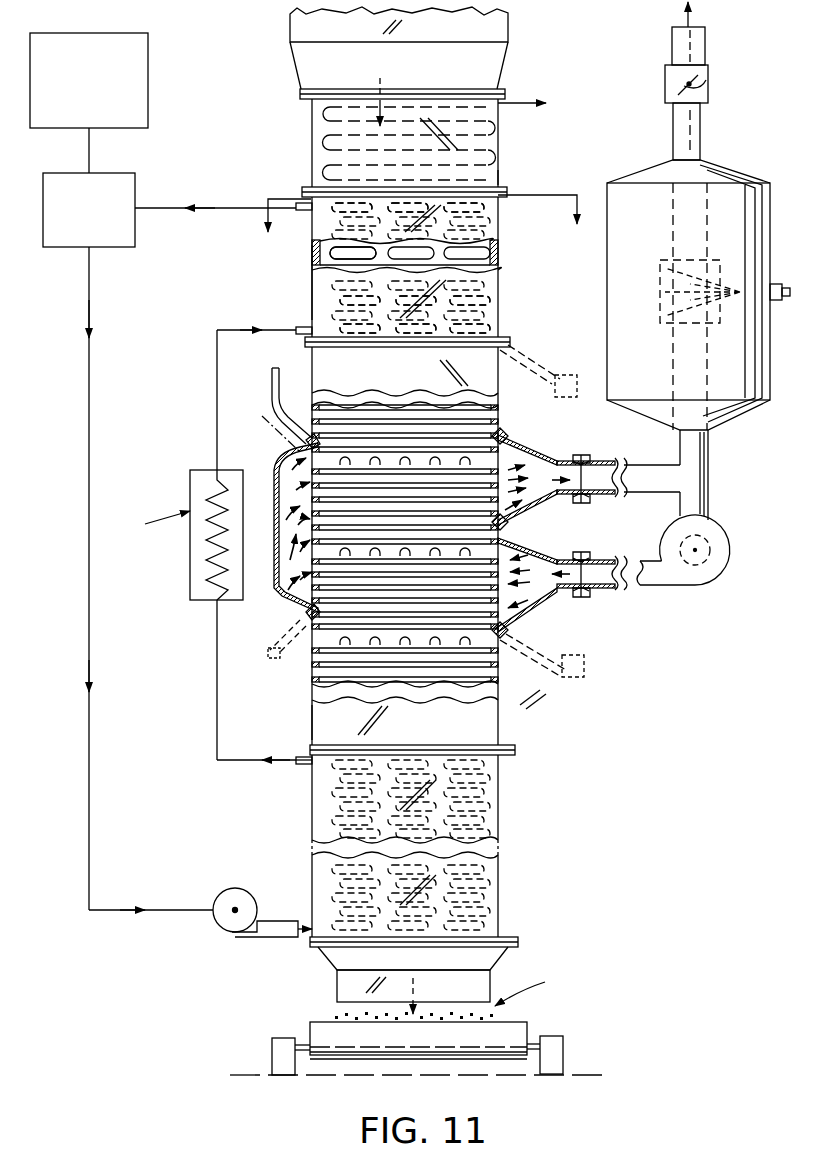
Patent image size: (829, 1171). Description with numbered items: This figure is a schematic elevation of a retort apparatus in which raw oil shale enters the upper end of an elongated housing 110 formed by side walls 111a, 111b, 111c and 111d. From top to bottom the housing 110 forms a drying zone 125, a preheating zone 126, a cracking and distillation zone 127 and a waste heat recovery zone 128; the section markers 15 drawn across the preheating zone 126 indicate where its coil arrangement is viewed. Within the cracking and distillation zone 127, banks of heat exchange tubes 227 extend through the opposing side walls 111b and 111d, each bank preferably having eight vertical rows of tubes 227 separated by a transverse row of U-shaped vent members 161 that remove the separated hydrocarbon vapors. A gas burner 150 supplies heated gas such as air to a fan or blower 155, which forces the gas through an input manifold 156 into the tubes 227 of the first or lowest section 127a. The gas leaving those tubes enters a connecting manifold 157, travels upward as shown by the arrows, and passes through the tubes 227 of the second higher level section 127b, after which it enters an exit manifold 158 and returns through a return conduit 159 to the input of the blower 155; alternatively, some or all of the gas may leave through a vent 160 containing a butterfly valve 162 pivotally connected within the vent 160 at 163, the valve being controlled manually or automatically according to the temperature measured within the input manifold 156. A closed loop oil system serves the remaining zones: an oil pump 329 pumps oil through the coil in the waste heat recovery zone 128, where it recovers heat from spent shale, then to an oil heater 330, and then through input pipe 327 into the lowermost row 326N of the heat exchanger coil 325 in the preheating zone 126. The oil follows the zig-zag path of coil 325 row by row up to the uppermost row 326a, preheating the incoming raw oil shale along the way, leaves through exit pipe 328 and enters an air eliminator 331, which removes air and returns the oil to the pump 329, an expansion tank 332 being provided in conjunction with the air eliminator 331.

The elongated housing 110 is at (300, 128).
The section line 15 is at (545, 177).
The drying zone 125 is at (295, 97).
The preheating zone 126 is at (165, 196).
The cracking and distillation zone 127 is at (165, 346).
The waste heat recovery zone 128 is at (165, 746).
The side wall 111a is at (463, 262).
The side wall 111b is at (500, 250).
The side wall 111c is at (472, 300).
The side wall 111d is at (311, 259).
The first or lowest section 127a is at (351, 586).
The second higher level section 127b is at (357, 476).
The U-shaped vent members 161 is at (466, 530).
The connecting manifold 157 is at (262, 426).
The exit manifold 158 is at (548, 374).
The input manifold 156 is at (548, 560).
The heat exchange tubes 227 is at (501, 416).
The return conduit 159 is at (641, 474).
The fan or blower 155 is at (690, 587).
The gas burner 150 is at (748, 415).
The vent 160 is at (674, 133).
The butterfly valve 162 is at (668, 90).
The pivotal connection 163 is at (706, 90).
The expansion tank 332 is at (72, 131).
The air eliminator 331 is at (72, 249).
The exit pipe 328 is at (213, 212).
The heat exchanger coil 325 is at (312, 251).
The uppermost row 326a is at (500, 207).
The lowermost row 326N is at (500, 330).
The input pipe 327 is at (275, 346).
The oil heater 330 is at (208, 603).
The oil pump 329 is at (243, 903).